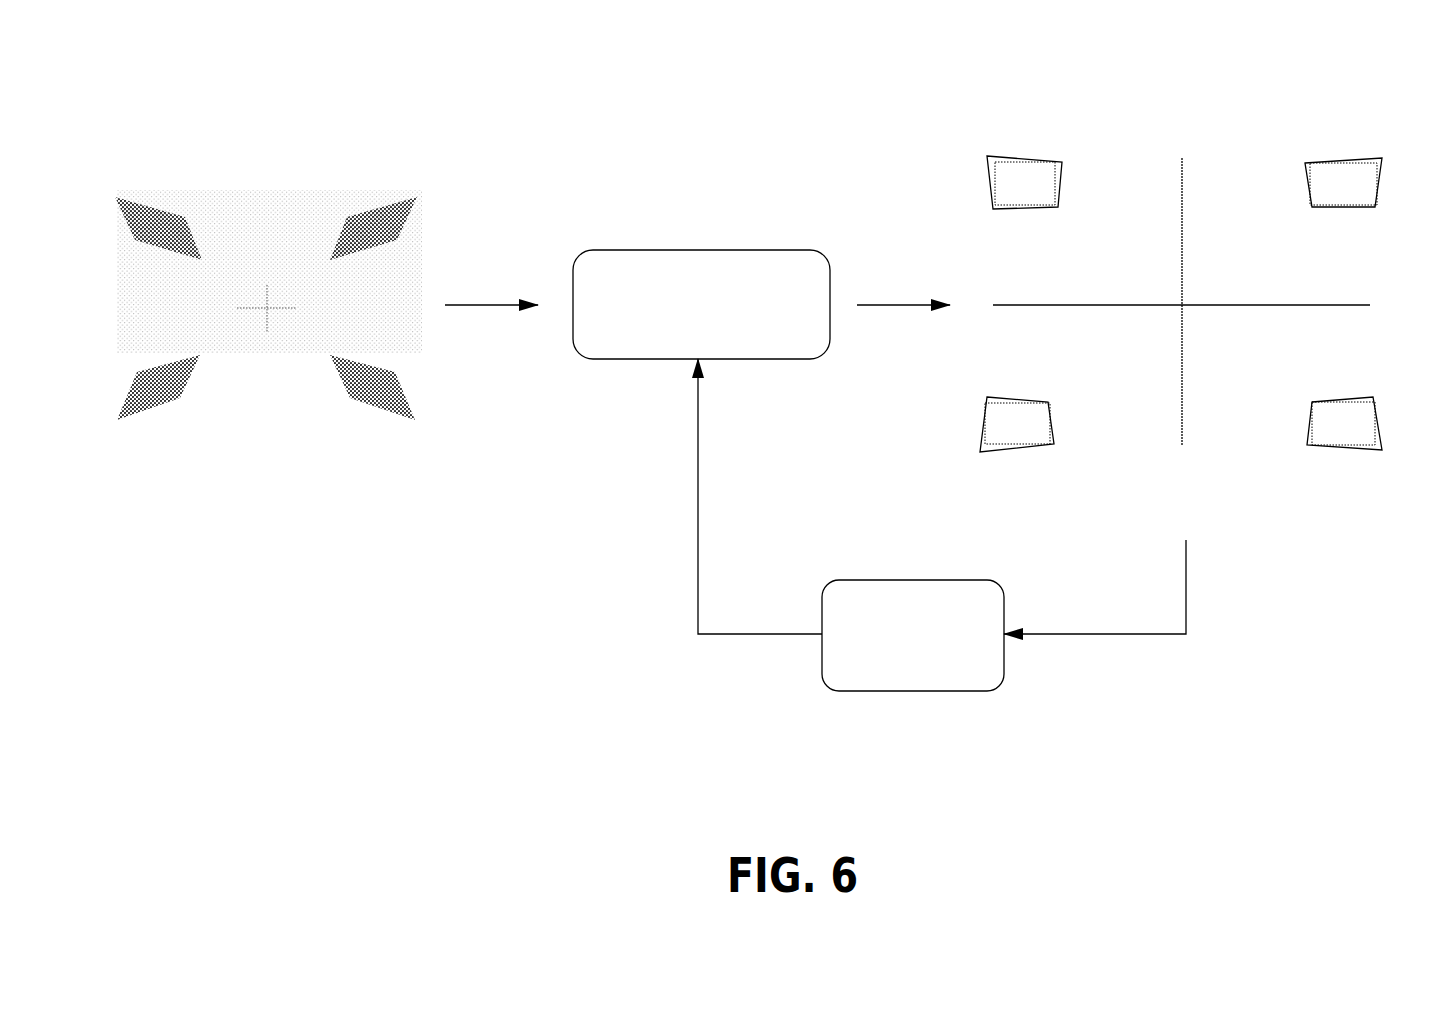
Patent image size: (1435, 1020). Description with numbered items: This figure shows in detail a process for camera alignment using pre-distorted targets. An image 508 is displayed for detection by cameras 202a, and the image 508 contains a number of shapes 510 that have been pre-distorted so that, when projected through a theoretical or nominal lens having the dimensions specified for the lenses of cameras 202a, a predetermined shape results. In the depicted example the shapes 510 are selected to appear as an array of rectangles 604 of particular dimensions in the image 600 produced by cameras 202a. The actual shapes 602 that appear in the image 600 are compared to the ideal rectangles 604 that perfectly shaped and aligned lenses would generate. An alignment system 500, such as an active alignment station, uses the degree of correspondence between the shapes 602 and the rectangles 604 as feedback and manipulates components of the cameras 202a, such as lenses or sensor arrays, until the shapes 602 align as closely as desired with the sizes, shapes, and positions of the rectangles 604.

The image 508 is at (342, 186).
The shapes 510 is at (181, 241).
The cameras 202a is at (680, 326).
The alignment system 500 is at (896, 670).
The image 600 is at (1160, 60).
The actual shapes 602 is at (998, 156).
The rectangles 604 is at (1025, 162).